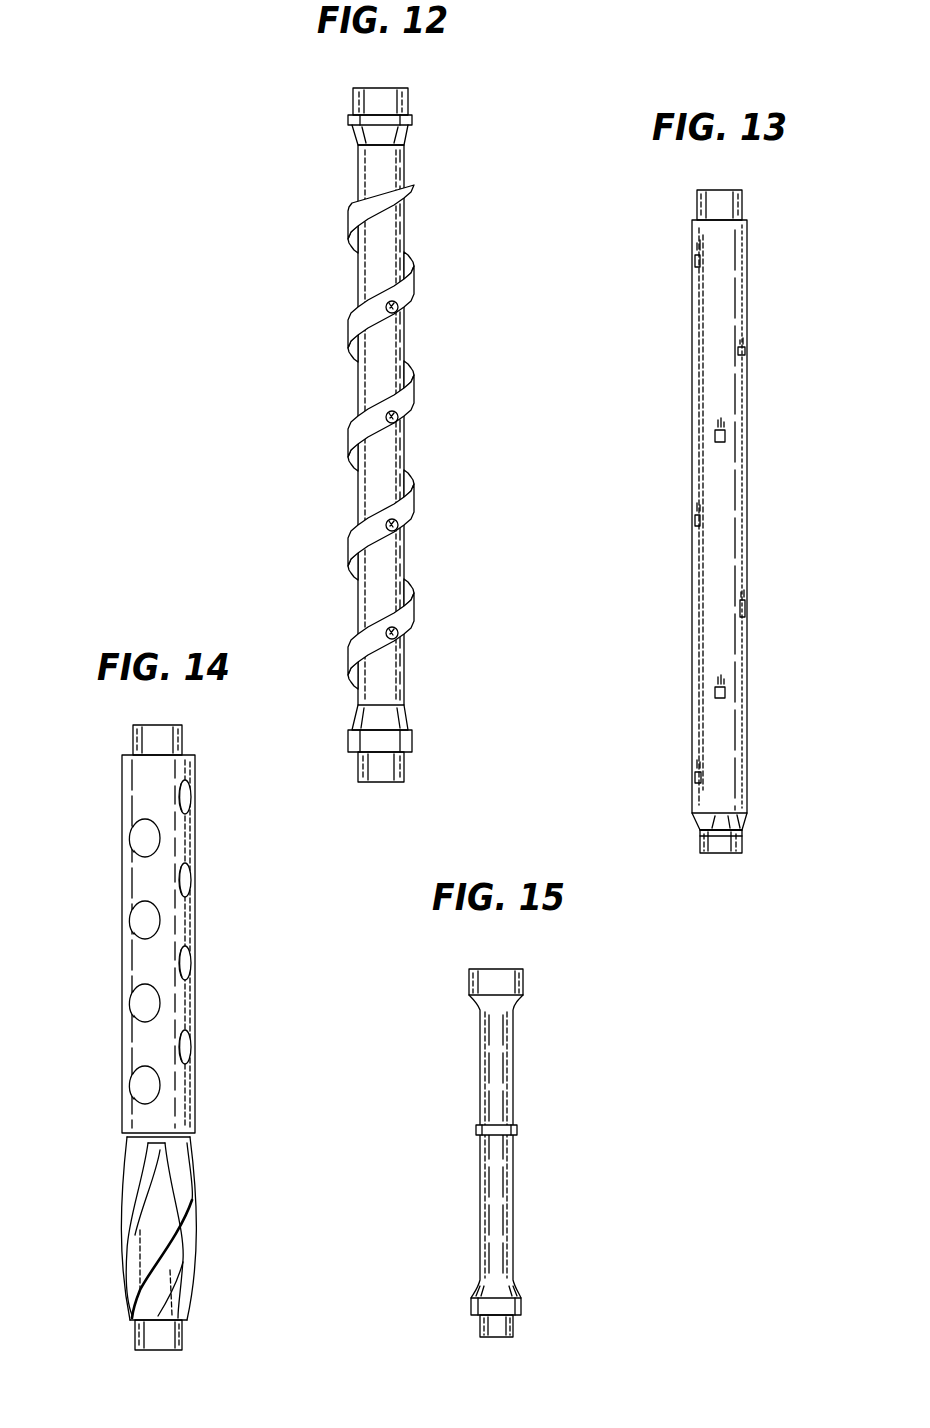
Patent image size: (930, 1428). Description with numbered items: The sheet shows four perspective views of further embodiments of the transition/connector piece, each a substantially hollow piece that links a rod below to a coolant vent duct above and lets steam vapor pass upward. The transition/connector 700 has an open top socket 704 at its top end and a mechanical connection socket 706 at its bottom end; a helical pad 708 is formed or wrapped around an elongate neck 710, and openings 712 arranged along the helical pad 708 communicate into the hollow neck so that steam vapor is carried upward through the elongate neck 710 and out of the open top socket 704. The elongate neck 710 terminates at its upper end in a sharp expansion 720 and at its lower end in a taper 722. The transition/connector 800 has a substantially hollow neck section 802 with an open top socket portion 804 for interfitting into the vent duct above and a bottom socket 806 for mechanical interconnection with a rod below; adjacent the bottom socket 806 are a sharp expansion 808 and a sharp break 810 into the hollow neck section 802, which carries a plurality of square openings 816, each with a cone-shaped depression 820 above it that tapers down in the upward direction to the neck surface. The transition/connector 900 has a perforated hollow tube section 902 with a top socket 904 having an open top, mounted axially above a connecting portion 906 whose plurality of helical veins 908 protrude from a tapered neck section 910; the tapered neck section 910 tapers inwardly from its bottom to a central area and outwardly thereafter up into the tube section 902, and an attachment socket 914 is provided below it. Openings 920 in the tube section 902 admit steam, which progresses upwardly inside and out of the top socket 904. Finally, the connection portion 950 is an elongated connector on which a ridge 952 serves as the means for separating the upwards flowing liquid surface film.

In FIG. 12, the transition/connector 700 is at (379, 433).
In FIG. 12, the open top socket 704 is at (408, 101).
In FIG. 12, the mechanical connection socket 706 is at (403, 767).
In FIG. 12, the helical pad 708 is at (385, 204).
In FIG. 12, the elongate neck 710 is at (372, 604).
In FIG. 12, the openings 712 is at (351, 218).
In FIG. 12, the sharp expansion 720 is at (410, 137).
In FIG. 12, the taper 722 is at (408, 721).
In FIG. 13, the transition/connector 800 is at (722, 515).
In FIG. 13, the hollow neck section 802 is at (748, 520).
In FIG. 13, the open top socket portion 804 is at (697, 206).
In FIG. 13, the bottom socket 806 is at (742, 840).
In FIG. 13, the sharp expansion 808 is at (700, 825).
In FIG. 13, the sharp break 810 is at (748, 815).
In FIG. 13, the openings 816 is at (695, 265).
In FIG. 13, the cone-shaped depression 820 is at (724, 425).
In FIG. 14, the transition/connector 900 is at (160, 1041).
In FIG. 14, the perforated hollow tube section 902 is at (197, 1000).
In FIG. 14, the top socket 904 is at (180, 745).
In FIG. 14, the connecting portion 906 is at (156, 1256).
In FIG. 14, the helical veins 908 is at (172, 1245).
In FIG. 14, the tapered neck section 910 is at (168, 1297).
In FIG. 14, the attachment socket 914 is at (138, 1335).
In FIG. 14, the openings 920 is at (130, 1021).
In FIG. 15, the connection portion 950 is at (541, 1153).
In FIG. 15, the ridge 952 is at (518, 1130).